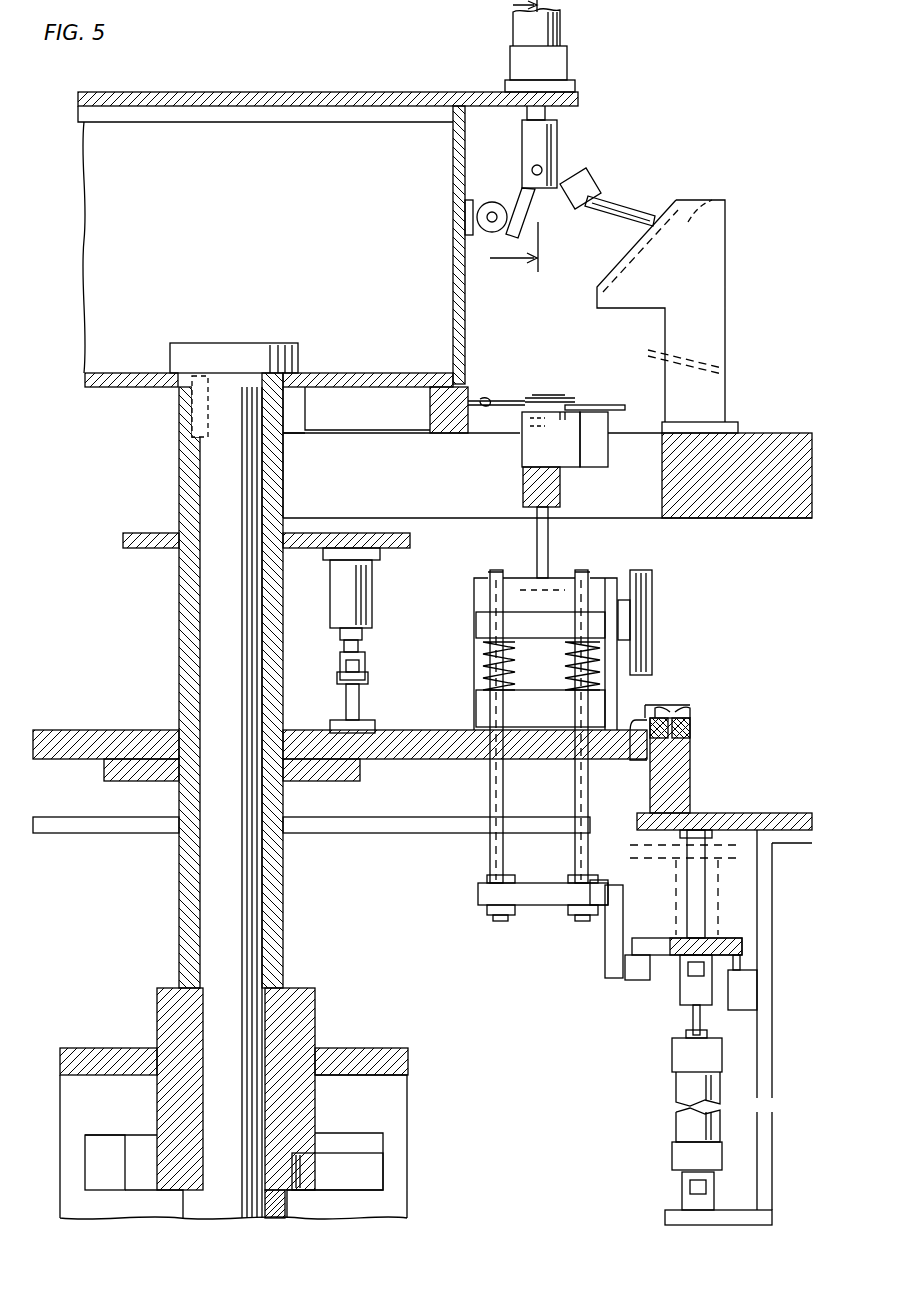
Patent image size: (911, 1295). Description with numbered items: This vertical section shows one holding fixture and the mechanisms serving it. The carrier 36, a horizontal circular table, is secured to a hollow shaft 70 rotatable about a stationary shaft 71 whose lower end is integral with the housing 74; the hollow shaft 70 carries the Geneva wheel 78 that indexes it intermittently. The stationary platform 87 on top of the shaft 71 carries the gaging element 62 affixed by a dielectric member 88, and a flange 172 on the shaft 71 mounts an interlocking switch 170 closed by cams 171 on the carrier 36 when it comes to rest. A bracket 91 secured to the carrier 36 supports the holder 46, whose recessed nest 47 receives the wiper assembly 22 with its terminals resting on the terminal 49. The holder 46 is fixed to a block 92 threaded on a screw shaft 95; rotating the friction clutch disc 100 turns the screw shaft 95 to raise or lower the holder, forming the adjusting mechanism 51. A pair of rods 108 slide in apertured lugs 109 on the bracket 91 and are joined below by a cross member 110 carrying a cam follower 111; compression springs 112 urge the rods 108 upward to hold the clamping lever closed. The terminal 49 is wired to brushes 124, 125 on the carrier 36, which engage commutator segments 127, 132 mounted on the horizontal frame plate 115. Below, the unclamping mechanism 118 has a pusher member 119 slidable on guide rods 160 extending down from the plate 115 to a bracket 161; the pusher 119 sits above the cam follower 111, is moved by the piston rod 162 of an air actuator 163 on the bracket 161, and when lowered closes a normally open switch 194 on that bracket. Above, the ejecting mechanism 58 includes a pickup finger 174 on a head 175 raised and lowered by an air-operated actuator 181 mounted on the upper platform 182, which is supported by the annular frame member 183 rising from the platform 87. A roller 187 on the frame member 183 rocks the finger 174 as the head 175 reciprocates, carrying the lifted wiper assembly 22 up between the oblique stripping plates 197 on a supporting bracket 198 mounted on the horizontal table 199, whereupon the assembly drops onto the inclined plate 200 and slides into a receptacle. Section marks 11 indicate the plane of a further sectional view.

The section line II 11 is at (507, 146).
The wiper assembly 22 is at (525, 400).
The carrier 36 is at (400, 759).
The holder 46 is at (540, 447).
The recessed nest 47 is at (524, 422).
The terminal 49 is at (600, 406).
The mechanism for vertically adjusting the holder 51 is at (608, 565).
The ejecting mechanism 58 is at (590, 120).
The gaging element 62 is at (480, 398).
The hollow shaft 70 is at (185, 895).
The stationary shaft 71 is at (218, 940).
The housing 74 is at (360, 1048).
The wheel 78 is at (110, 1150).
The stationary upper platform 87 is at (340, 373).
The dielectric member 88 is at (452, 433).
The bracket 91 is at (476, 596).
The block 92 is at (530, 490).
The screw shaft 95 is at (537, 540).
The friction clutch disc 100 is at (645, 617).
The rods 108 is at (555, 794).
The apertured lugs 109 is at (478, 632).
The cross member 110 is at (535, 893).
The cam follower 111 is at (633, 985).
The compression springs 112 is at (565, 667).
The horizontal frame plate 115 is at (760, 813).
The unclamping mechanism 118 is at (666, 1060).
The pusher member 119 is at (655, 942).
The brush 124 is at (688, 712).
The brush 125 is at (662, 714).
The commutator segment 127 is at (692, 724).
The commutator segment 132 is at (633, 760).
The guide rods 160 is at (690, 885).
The bracket 161 is at (765, 920).
The piston rod 162 is at (695, 1010).
The air-operated actuator 163 is at (690, 1095).
The interlocking switch 170 is at (355, 600).
The cams 171 is at (368, 695).
The flange 172 is at (390, 548).
The pickup finger 174 is at (600, 190).
The head 175 is at (542, 146).
The air-operated actuator 181 is at (560, 30).
The upper platform 182 is at (290, 92).
The annular frame member 183 is at (465, 313).
The roller 187 is at (492, 202).
The normally open switch 194 is at (752, 985).
The stripping plates 197 is at (705, 203).
The supporting bracket 198 is at (710, 240).
The horizontal table 199 is at (766, 500).
The inclined plate 200 is at (648, 352).